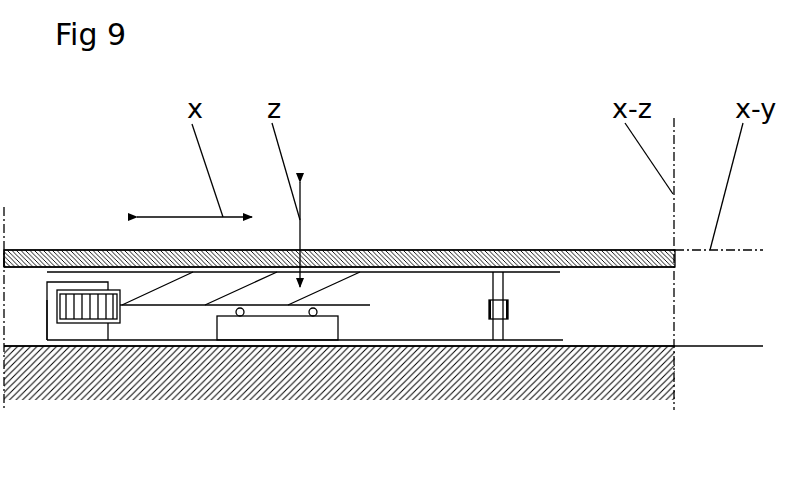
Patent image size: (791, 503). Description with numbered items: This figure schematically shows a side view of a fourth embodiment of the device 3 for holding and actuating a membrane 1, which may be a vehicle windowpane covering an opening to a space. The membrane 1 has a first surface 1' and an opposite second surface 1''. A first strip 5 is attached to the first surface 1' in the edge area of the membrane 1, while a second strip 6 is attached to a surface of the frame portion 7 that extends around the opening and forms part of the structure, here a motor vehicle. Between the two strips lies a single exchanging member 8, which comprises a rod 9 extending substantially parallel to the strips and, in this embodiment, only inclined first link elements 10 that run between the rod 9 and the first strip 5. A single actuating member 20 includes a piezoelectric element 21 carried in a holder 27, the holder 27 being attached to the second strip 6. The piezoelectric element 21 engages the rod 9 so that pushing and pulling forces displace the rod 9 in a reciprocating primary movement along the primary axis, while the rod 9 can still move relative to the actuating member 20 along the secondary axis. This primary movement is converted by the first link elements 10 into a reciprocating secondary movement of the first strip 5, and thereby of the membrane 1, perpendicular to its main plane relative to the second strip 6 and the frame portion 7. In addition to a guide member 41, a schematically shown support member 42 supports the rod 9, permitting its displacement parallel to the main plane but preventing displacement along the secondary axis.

The membrane 1 is at (339, 171).
The first surface 1' is at (339, 180).
The second surface 1'' is at (31, 367).
The device 3 is at (644, 347).
The first strip 5 is at (465, 262).
The second strip 6 is at (373, 347).
The frame portion 7 is at (573, 372).
The exchanging member 8 is at (357, 287).
The rod 9 is at (167, 307).
The first link elements 10 is at (408, 287).
The actuating member 20 is at (83, 283).
The piezoelectric element 21 is at (106, 308).
The holder 27 is at (67, 333).
The guide member 41 is at (501, 285).
The support member 42 is at (265, 328).